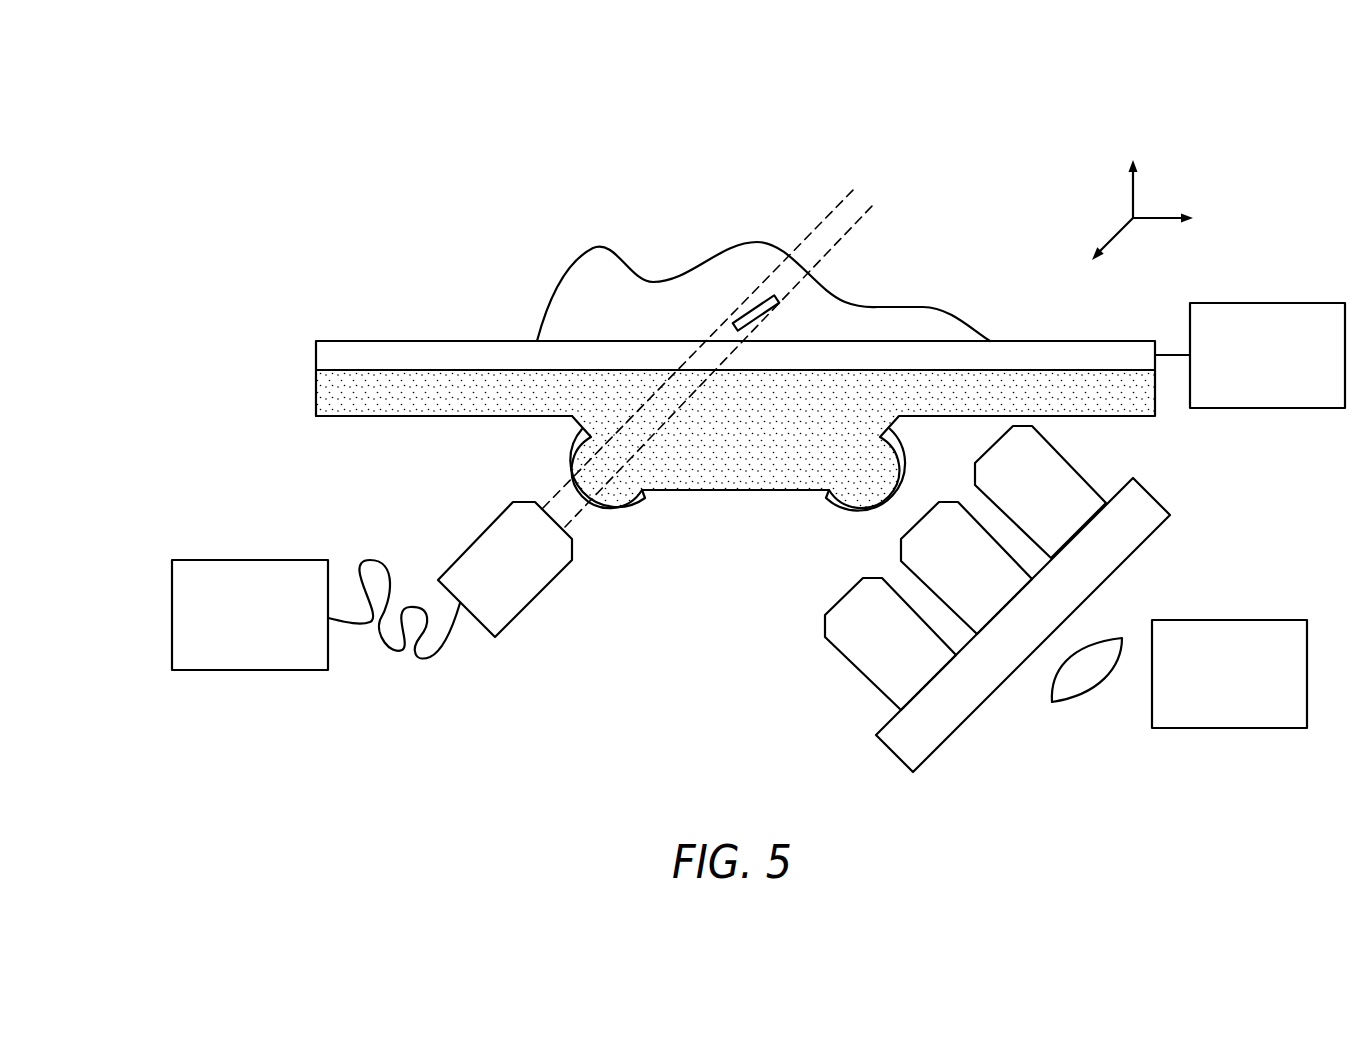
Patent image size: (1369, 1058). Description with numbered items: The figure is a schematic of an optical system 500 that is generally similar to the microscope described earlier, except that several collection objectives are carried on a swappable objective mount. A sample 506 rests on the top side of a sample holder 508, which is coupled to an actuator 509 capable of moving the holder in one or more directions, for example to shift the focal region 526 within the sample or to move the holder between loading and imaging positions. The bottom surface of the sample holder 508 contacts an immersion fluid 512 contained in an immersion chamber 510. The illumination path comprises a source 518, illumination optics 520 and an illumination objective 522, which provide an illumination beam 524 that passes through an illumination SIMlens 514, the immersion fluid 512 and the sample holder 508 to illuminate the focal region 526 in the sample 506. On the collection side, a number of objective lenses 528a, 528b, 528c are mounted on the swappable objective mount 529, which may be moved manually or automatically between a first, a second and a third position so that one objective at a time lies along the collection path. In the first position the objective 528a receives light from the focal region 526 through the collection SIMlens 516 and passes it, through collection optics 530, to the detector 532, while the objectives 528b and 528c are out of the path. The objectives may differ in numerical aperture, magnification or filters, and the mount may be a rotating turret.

The optical system 500 is at (212, 100).
The sample 506 is at (560, 277).
The sample holder 508 is at (316, 345).
The actuator 509 is at (1262, 303).
The immersion chamber 510 is at (316, 378).
The immersion fluid 512 is at (441, 405).
The illumination SIMlens 514 is at (617, 510).
The collection SIMlens 516 is at (853, 510).
The source 518 is at (243, 560).
The illumination optics 520 is at (440, 654).
The illumination objective 522 is at (478, 541).
The illumination beam 524 is at (846, 219).
The focal region 526 is at (752, 302).
The first objective 528a is at (923, 659).
The second objective 528b is at (998, 583).
The third objective 528c is at (1072, 510).
The swappable objective mount 529 is at (896, 758).
The collection optics 530 is at (1060, 703).
The detector 532 is at (1222, 620).